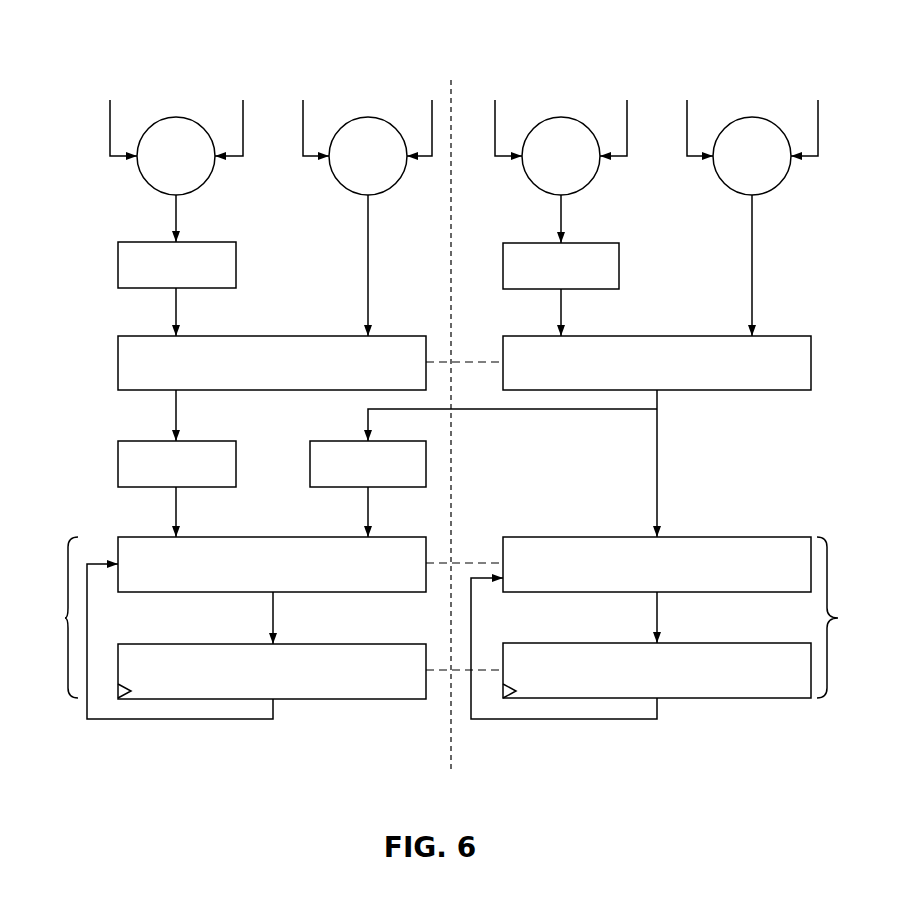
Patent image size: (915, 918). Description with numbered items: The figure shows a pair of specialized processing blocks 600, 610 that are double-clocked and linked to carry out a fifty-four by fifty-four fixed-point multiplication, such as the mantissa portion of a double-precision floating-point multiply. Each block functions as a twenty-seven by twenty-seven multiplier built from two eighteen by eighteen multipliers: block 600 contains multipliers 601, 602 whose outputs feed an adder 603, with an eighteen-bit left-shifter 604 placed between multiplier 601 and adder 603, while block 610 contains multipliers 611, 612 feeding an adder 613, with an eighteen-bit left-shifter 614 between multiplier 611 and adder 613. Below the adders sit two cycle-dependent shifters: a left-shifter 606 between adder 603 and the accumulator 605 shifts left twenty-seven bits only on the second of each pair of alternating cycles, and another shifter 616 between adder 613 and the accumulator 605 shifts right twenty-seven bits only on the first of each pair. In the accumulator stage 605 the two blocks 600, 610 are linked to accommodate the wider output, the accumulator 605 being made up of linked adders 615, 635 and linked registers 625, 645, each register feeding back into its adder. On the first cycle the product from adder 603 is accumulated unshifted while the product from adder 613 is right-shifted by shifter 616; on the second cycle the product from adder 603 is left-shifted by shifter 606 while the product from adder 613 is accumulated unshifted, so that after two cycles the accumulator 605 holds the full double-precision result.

The specialized processing block 600 is at (134, 60).
The specialized processing block 610 is at (534, 60).
The 18×18 multiplier 601 is at (194, 190).
The 18×18 multiplier 602 is at (386, 190).
The 18×18 multiplier 611 is at (579, 190).
The 18×18 multiplier 612 is at (770, 190).
The 18-bit left-shifter 604 is at (158, 242).
The 18-bit left-shifter 614 is at (543, 243).
The adder 603 is at (158, 336).
The adder 613 is at (533, 336).
The left-shifter 606 is at (158, 441).
The shifter 616 is at (328, 441).
The adder 615 is at (158, 537).
The adder 635 is at (541, 537).
The register 625 is at (158, 644).
The register 645 is at (541, 643).
The accumulator 605 is at (451, 617).